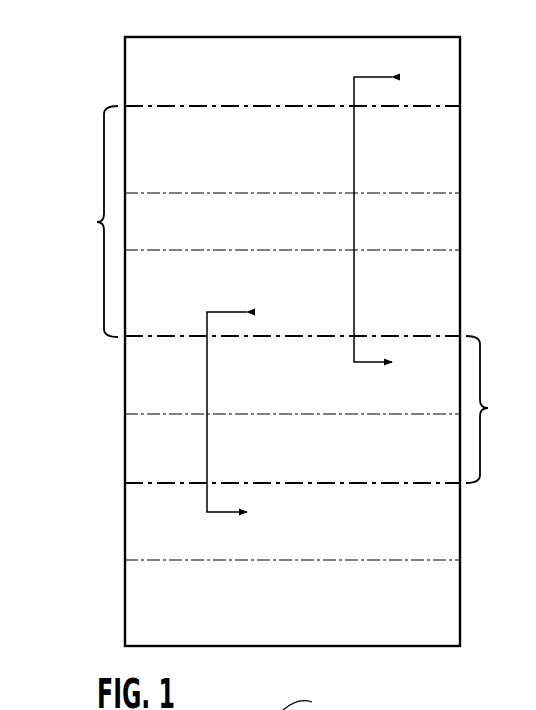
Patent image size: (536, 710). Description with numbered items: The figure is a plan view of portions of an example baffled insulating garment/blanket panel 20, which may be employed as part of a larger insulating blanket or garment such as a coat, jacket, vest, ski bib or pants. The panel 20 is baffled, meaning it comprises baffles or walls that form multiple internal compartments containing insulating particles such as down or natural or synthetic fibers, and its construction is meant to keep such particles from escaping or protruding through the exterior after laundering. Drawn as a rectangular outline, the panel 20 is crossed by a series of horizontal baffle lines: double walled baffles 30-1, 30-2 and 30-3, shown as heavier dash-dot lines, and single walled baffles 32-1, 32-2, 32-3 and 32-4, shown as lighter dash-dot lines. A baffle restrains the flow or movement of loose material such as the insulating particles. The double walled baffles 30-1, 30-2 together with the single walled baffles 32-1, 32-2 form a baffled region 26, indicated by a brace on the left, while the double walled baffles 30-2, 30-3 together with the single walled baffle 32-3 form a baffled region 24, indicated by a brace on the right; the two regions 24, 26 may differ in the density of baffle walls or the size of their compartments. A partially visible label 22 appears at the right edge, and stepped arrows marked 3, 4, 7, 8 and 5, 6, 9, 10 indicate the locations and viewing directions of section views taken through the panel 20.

The baffled insulating garment/blanket panel 20 is at (84, 72).
The layer 22 is at (532, 290).
The baffled region 24 is at (490, 409).
The baffled region 26 is at (95, 221).
The double walled baffle 30-1 is at (418, 106).
The double walled baffle 30-2 is at (152, 336).
The double walled baffle 30-3 is at (152, 483).
The single walled baffle 32-1 is at (411, 193).
The single walled baffle 32-2 is at (426, 250).
The single walled baffle 32-3 is at (152, 414).
The single walled baffle 32-4 is at (152, 560).
The section view direction 3 is at (243, 413).
The section view direction 4 is at (243, 413).
The section view direction 7 is at (243, 413).
The section view direction 8 is at (243, 413).
The section view direction 5 is at (393, 220).
The section view direction 6 is at (393, 220).
The section view direction 9 is at (393, 220).
The section view direction 10 is at (393, 220).